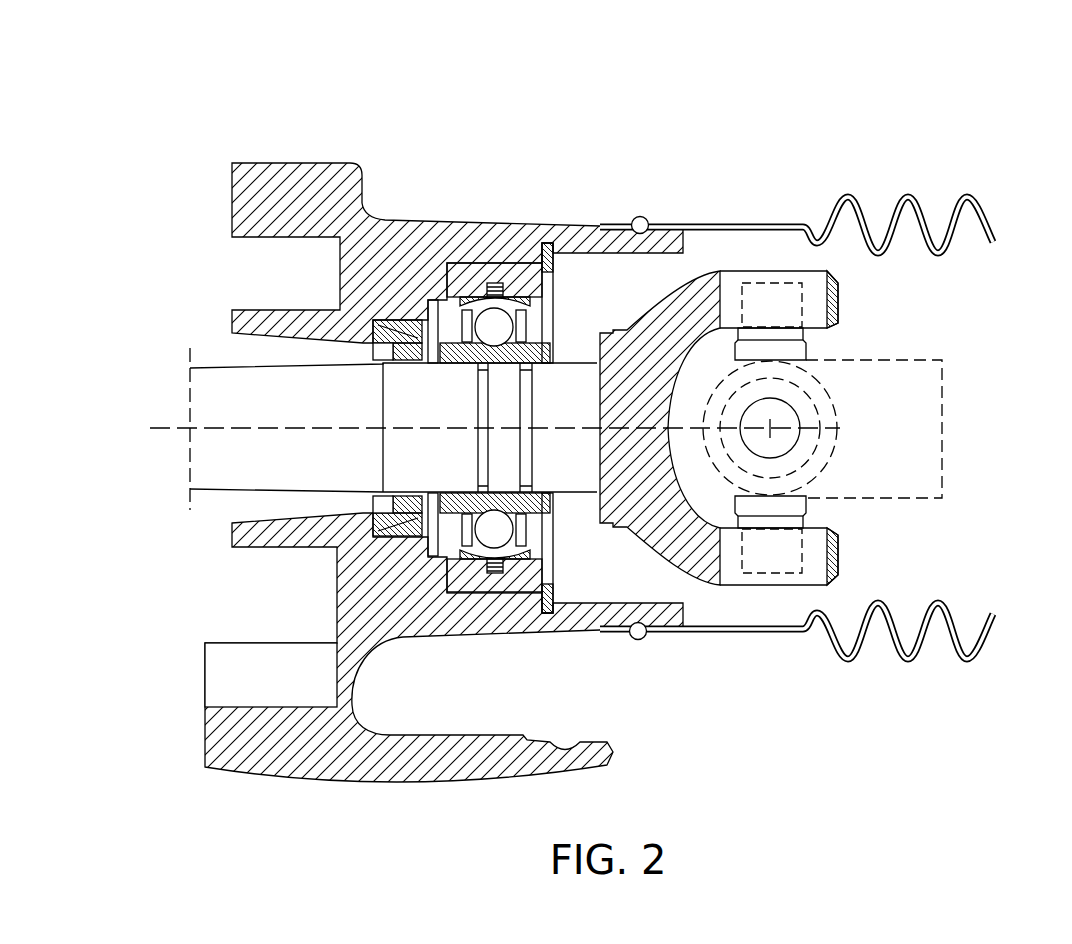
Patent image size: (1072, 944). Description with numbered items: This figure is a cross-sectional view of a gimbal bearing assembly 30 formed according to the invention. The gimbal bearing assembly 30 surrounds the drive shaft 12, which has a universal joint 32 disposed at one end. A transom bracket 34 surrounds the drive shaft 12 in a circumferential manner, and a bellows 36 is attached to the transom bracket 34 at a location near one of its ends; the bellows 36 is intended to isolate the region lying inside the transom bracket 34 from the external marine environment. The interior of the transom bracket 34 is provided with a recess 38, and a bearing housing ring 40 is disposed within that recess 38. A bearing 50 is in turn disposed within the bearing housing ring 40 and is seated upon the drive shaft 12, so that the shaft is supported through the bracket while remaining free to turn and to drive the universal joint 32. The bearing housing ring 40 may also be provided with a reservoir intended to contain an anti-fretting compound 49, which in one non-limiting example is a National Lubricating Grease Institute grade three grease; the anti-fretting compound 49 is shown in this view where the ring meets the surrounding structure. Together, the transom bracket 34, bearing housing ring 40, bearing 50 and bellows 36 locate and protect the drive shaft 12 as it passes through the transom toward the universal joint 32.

The drive shaft 12 is at (210, 375).
The gimbal bearing assembly 30 is at (815, 110).
The universal joint 32 is at (838, 338).
The transom bracket 34 is at (312, 177).
The bellows 36 is at (708, 224).
The recess 38 is at (467, 265).
The bearing housing ring 40 is at (528, 263).
The anti-fretting compound 49 is at (502, 263).
The bearing 50 is at (540, 321).